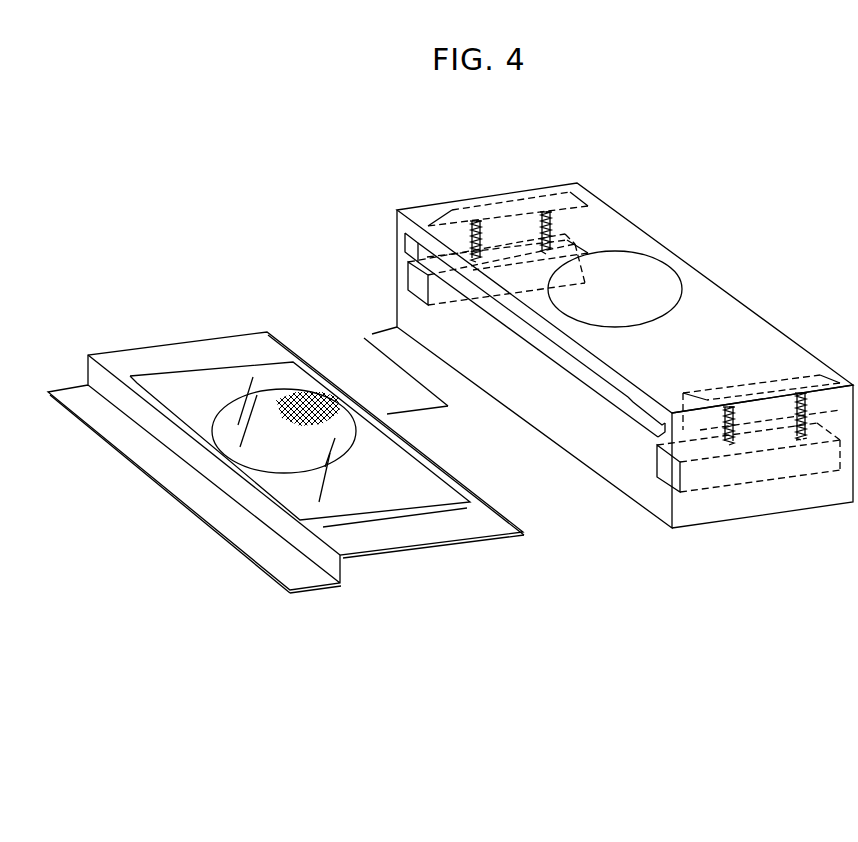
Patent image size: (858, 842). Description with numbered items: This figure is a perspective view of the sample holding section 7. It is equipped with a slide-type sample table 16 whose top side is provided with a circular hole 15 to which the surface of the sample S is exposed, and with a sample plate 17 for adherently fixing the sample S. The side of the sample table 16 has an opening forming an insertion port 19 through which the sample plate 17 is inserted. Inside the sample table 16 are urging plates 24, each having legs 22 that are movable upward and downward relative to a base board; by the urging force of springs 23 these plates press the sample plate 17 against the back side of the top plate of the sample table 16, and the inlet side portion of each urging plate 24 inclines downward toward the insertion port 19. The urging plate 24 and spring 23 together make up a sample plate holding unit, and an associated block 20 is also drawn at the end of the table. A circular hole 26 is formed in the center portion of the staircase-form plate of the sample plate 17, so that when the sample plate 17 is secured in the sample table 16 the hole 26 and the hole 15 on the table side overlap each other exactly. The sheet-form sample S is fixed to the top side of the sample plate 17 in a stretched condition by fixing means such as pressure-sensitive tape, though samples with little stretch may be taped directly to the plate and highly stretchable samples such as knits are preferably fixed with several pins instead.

The sample holding section 7 is at (642, 210).
The circular hole 15 is at (657, 273).
The sample table 16 is at (763, 327).
The sample plate 17 is at (284, 350).
The insertion port 19 is at (588, 377).
The block 20 is at (697, 492).
The legs 22 is at (792, 432).
The spring 23 is at (807, 424).
The urging plate 24 is at (500, 202).
The circular hole 26 is at (357, 437).
The sample S is at (320, 397).